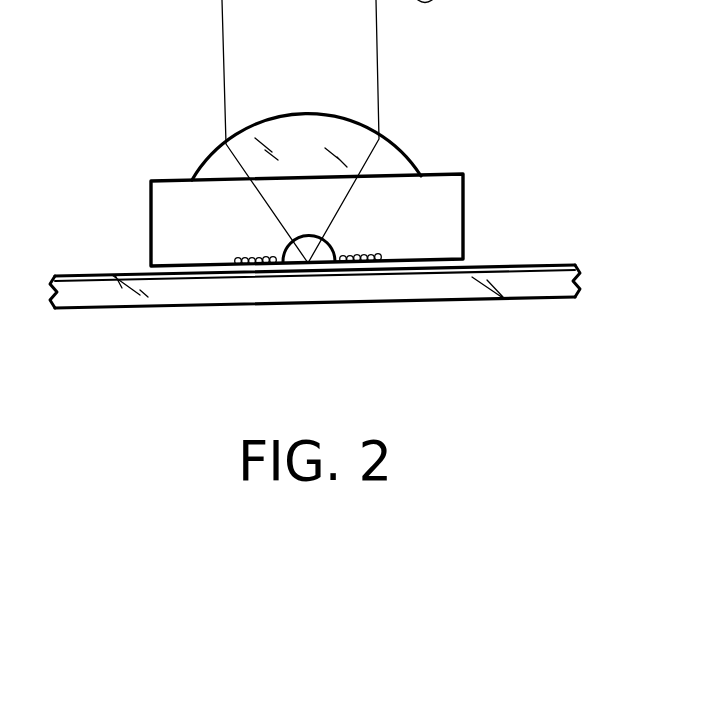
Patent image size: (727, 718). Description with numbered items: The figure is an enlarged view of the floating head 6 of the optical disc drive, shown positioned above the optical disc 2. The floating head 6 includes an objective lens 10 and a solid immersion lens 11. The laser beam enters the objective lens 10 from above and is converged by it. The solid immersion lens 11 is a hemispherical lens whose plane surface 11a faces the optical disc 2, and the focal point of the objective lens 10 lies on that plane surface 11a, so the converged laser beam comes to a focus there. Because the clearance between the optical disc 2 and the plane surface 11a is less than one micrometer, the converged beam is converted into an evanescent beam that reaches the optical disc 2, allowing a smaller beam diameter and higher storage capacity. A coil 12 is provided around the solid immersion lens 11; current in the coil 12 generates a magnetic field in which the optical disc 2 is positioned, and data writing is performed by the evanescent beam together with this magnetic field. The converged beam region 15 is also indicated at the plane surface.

The optical disc 2 is at (562, 263).
The floating head 6 is at (274, 213).
The objective lens 10 is at (265, 117).
The solid immersion lens 11 is at (307, 236).
The plane surface 11a is at (297, 265).
The coil 12 is at (247, 264).
The optical element 15 is at (312, 265).